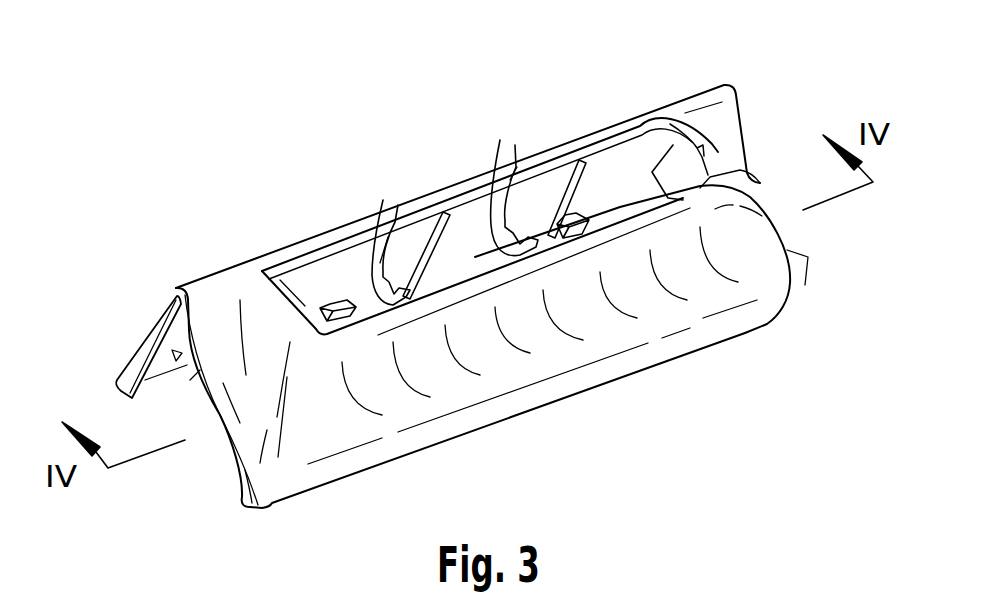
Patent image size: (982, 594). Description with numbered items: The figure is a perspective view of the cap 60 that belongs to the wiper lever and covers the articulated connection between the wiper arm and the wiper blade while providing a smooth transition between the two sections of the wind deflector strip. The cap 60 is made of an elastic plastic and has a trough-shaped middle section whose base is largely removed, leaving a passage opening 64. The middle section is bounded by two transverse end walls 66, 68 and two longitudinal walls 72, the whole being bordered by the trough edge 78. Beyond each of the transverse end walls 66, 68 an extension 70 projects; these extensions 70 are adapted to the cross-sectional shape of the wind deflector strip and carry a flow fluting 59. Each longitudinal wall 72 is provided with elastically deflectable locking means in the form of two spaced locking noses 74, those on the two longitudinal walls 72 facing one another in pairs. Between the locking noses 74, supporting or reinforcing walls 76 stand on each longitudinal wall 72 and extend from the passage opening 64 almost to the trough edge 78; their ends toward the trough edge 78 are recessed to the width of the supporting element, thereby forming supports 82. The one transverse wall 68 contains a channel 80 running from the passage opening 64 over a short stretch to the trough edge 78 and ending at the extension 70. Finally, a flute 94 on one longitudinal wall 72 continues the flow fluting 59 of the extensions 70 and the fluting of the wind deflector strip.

The flow fluting 59 is at (200, 370).
The cap 60 is at (702, 84).
The passage opening 64 is at (650, 122).
The transverse end wall 66 is at (282, 316).
The transverse end wall 68 is at (705, 182).
The extension 70 is at (203, 325).
The longitudinal wall 72 is at (293, 290).
The locking nose 74 is at (337, 302).
The supporting wall 76 is at (417, 244).
The trough edge 78 is at (486, 215).
The channel 80 is at (728, 152).
The support 82 is at (383, 205).
The flute 94 is at (443, 380).